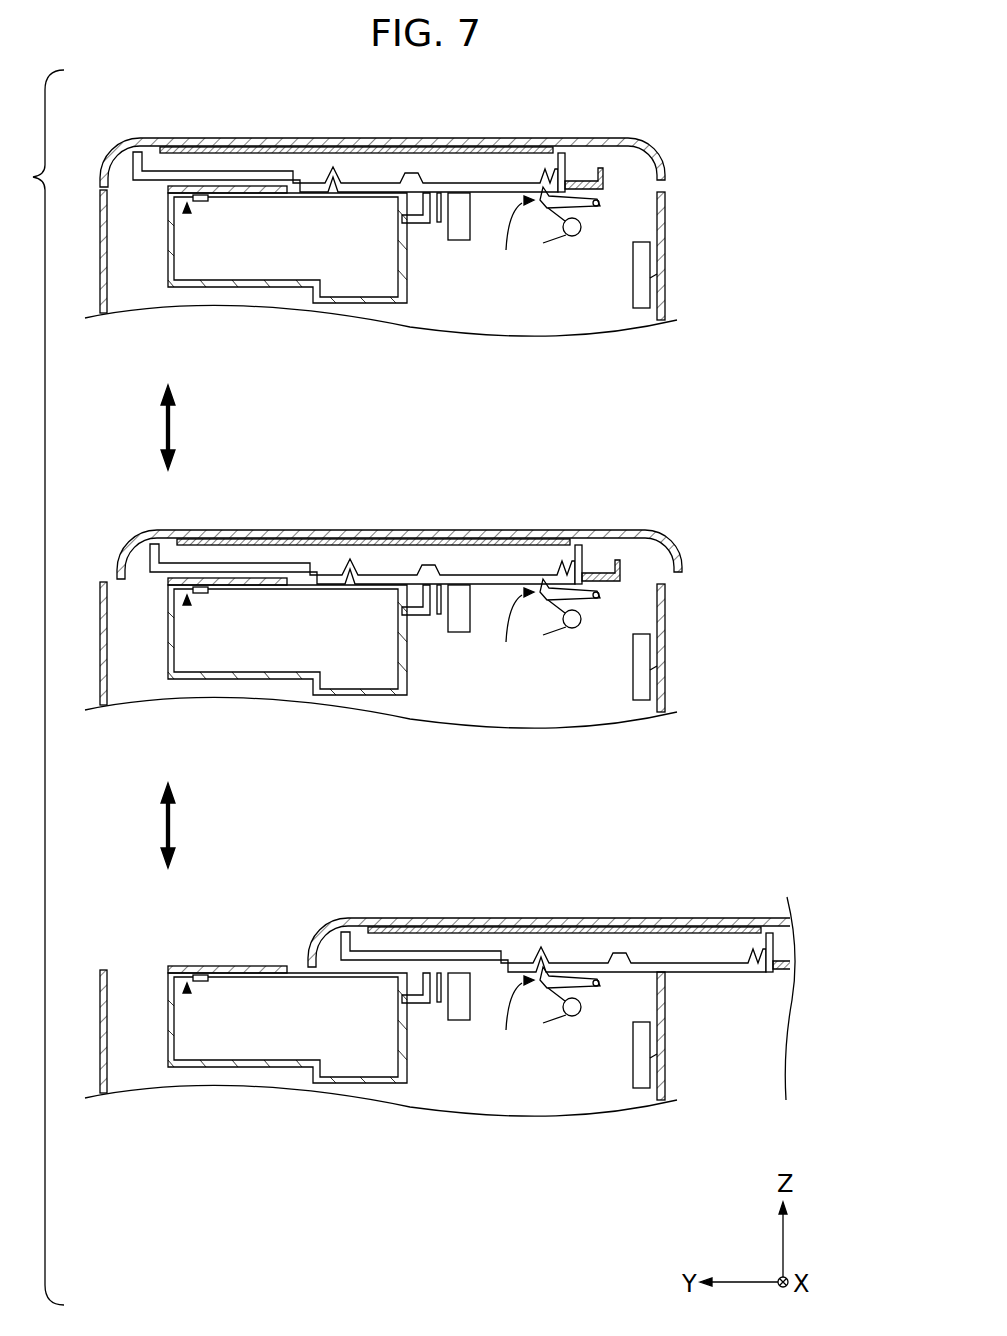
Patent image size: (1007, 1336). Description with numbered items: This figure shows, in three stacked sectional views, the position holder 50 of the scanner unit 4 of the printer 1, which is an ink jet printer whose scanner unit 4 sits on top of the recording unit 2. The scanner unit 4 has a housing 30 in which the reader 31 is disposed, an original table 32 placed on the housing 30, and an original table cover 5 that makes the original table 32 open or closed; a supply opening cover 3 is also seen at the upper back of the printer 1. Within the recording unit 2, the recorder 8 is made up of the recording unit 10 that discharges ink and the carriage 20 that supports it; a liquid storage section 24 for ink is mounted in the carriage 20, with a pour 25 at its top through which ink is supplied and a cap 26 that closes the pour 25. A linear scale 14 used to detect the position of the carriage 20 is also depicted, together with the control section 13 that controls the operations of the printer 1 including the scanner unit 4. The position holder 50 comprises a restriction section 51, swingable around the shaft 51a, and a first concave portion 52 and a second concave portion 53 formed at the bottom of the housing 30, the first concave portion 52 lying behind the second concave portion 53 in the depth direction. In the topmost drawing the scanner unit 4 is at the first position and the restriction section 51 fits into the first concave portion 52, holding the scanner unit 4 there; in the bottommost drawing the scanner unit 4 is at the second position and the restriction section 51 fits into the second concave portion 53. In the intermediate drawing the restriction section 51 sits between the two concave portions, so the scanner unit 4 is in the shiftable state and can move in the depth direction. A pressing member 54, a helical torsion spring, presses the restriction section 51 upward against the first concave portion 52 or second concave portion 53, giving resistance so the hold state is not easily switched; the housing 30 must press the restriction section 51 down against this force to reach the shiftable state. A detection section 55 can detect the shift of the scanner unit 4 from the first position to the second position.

The printer 1 is at (692, 270).
The recording unit 2 is at (666, 236).
The supply opening cover 3 is at (622, 139).
The scanner unit 4 is at (150, 125).
The original table cover 5 is at (285, 139).
The recorder 8 is at (385, 814).
The recording unit 10 is at (370, 306).
The control section 13 is at (663, 297).
The linear scale 14 is at (440, 195).
The carriage 20 is at (404, 272).
The liquid storage section 24 is at (430, 226).
The pour 25 is at (187, 210).
The cap 26 is at (197, 195).
The housing 30 is at (570, 172).
The reader 31 is at (233, 154).
The original table 32 is at (261, 146).
The position holder 50 is at (506, 250).
The restriction section 51 is at (541, 195).
The shaft 51a is at (600, 208).
The first concave portion 52 is at (545, 186).
The second concave portion 53 is at (337, 185).
The pressing member 54 is at (573, 237).
The detection section 55 is at (460, 242).